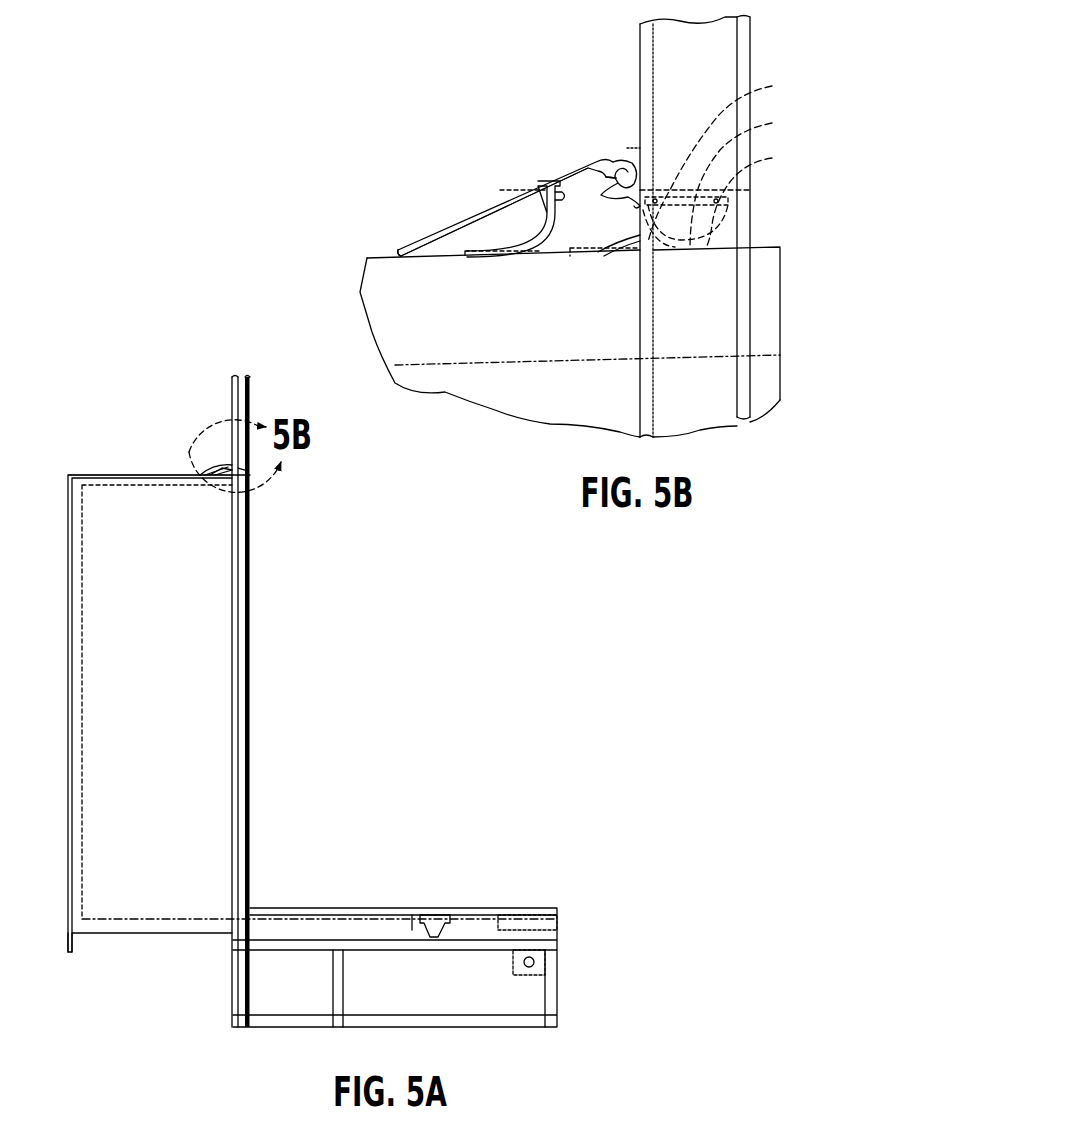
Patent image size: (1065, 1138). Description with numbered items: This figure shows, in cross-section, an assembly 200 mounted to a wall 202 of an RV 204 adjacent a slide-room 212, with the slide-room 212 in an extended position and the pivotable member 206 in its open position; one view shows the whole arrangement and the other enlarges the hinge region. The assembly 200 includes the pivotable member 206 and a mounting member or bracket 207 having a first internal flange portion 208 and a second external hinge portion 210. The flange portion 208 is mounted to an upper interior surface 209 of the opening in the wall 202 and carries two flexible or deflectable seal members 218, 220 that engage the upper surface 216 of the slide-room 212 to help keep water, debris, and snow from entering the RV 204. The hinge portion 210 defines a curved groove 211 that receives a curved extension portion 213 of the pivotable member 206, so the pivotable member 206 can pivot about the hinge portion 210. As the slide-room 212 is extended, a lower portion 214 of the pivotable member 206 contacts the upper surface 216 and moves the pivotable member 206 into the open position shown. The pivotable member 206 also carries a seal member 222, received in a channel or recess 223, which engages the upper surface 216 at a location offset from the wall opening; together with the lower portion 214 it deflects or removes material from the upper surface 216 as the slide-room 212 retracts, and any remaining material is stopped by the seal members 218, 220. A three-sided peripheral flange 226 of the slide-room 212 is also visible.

In FIG. 5B, the assembly 200 is at (502, 90).
In FIG. 5A, the assembly 200 is at (140, 382).
In FIG. 5B, the wall 202 is at (745, 45).
In FIG. 5A, the wall 202 is at (249, 400).
In FIG. 5A, the RV 204 is at (312, 884).
In FIG. 5B, the pivotable member 206 is at (480, 205).
In FIG. 5A, the pivotable member 206 is at (212, 466).
In FIG. 5B, the mounting member or bracket 207 is at (736, 155).
In FIG. 5B, the flange portion 208 is at (757, 177).
In FIG. 5B, the upper interior surface 209 is at (765, 194).
In FIG. 5B, the hinge portion 210 is at (620, 157).
In FIG. 5B, the curved groove 211 is at (628, 150).
In FIG. 5B, the slide-room 212 is at (553, 323).
In FIG. 5A, the slide-room 212 is at (175, 670).
In FIG. 5B, the curved extension portion 213 is at (613, 170).
In FIG. 5B, the lower portion 214 is at (398, 248).
In FIG. 5B, the upper surface 216 is at (437, 257).
In FIG. 5A, the upper surface 216 is at (108, 474).
In FIG. 5B, the seal member 218 is at (728, 210).
In FIG. 5B, the seal member 220 is at (660, 243).
In FIG. 5B, the seal member 222 is at (547, 217).
In FIG. 5B, the channel or recess 223 is at (561, 196).
In FIG. 5A, the three-sided peripheral flange 226 is at (67, 937).